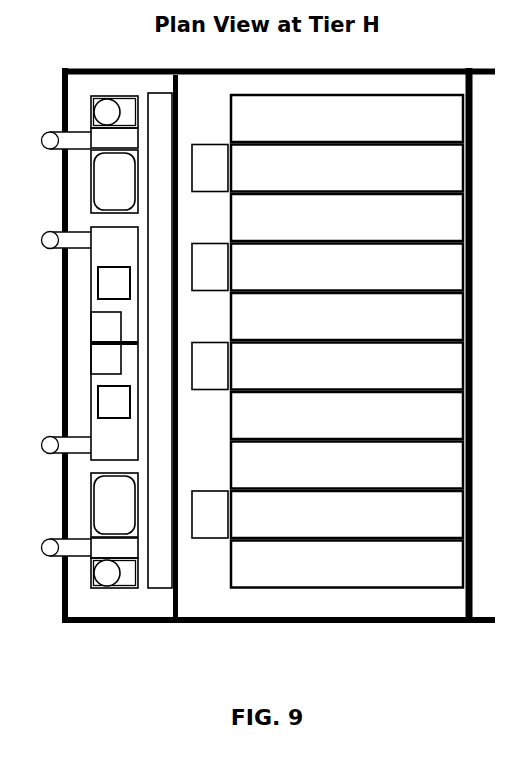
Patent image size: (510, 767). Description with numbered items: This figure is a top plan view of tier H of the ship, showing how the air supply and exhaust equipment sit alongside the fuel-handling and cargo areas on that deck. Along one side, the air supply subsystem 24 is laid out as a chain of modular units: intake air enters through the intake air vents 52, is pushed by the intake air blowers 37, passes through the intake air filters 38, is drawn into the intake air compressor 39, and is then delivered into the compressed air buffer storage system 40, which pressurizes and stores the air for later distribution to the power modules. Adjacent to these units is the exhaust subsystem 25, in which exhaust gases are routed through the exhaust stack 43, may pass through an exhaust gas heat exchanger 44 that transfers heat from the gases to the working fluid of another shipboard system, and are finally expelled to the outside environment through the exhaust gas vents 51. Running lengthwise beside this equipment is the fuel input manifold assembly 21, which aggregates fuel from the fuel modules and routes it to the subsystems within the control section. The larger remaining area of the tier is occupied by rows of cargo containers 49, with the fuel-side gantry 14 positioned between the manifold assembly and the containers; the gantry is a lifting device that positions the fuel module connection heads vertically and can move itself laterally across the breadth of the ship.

The fuel-side gantry 14 is at (210, 342).
The fuel input manifold assembly 21 is at (160, 340).
The air supply subsystem 24 is at (118, 96).
The exhaust subsystem 25 is at (90, 297).
The intake air blowers 37 is at (128, 107).
The intake air filters 38 is at (107, 342).
The intake air compressor 39 is at (114, 343).
The compressed air buffer storage system 40 is at (114, 343).
The exhaust stack 43 is at (106, 343).
The exhaust gas heat exchanger 44 is at (114, 342).
The cargo containers 49 is at (347, 341).
The exhaust gas vents 51 is at (48, 232).
The intake air vents 52 is at (48, 133).